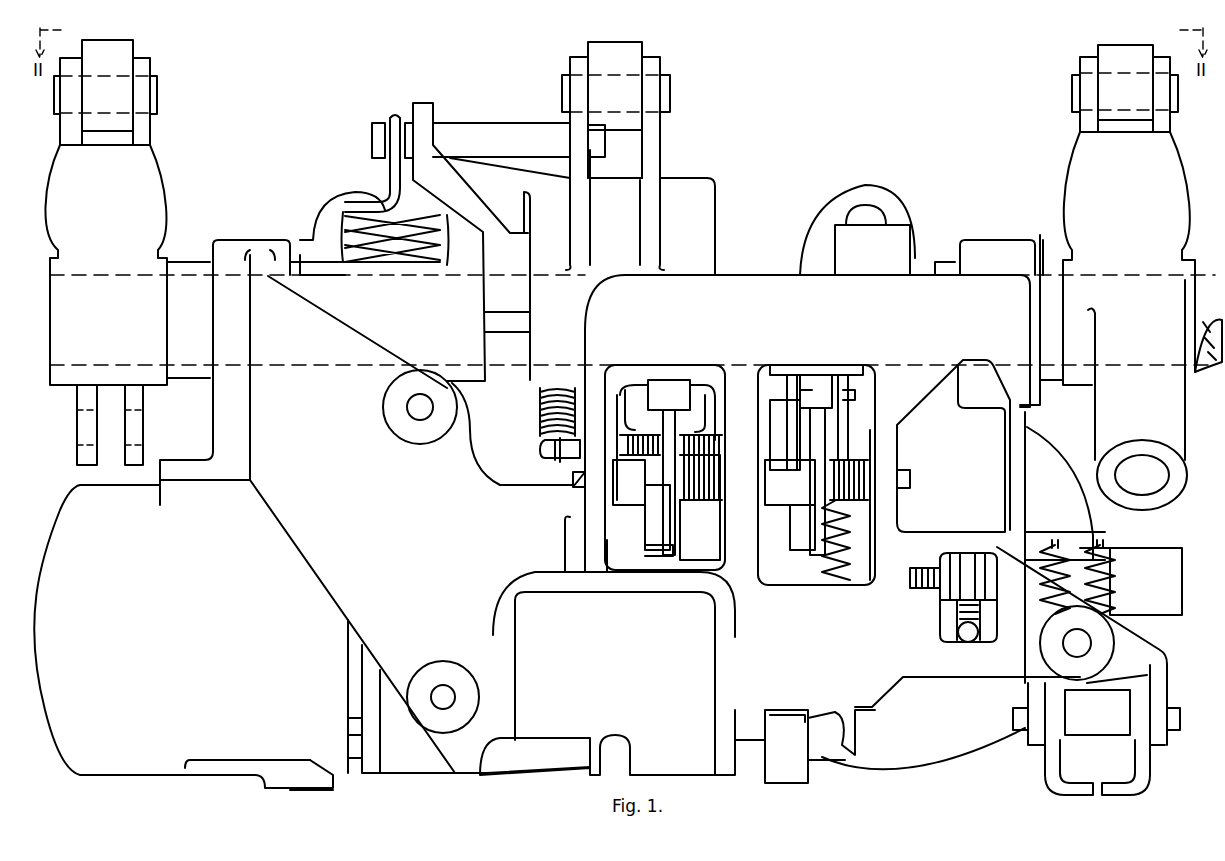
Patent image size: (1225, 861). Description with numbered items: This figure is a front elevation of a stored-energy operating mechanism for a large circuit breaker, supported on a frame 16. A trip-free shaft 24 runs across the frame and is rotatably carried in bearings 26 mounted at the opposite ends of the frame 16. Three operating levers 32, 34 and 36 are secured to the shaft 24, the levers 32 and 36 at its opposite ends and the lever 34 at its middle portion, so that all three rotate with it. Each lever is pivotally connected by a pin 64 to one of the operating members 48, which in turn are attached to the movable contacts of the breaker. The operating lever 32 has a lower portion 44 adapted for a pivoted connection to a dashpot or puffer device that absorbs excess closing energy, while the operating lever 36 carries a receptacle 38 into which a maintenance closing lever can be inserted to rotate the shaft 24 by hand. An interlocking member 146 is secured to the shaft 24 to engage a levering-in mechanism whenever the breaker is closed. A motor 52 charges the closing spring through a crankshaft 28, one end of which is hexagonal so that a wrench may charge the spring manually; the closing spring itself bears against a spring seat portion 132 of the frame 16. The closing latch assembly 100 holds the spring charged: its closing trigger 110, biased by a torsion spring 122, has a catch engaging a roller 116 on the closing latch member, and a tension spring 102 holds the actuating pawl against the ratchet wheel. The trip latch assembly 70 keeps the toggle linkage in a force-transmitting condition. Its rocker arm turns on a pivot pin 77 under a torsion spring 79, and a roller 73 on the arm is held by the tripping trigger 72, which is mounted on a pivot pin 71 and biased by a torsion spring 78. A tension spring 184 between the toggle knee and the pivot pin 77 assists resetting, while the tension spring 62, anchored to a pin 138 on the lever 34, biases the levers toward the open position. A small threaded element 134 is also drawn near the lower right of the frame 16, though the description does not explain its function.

The frame 16 is at (213, 408).
The trip-free shaft 24 is at (190, 262).
The bearings 26 is at (262, 248).
The crankshaft 28 is at (1140, 552).
The operating lever 32 is at (52, 107).
The operating lever 34 is at (552, 104).
The operating lever 36 is at (1060, 107).
The receptacle 38 is at (1095, 428).
The lower portion 44 is at (78, 400).
The operating members 48 is at (128, 50).
The motor 52 is at (130, 777).
The tension spring 62 is at (443, 218).
The pin 64 is at (158, 98).
The trip latch assembly 70 is at (678, 457).
The pivot pin 71 is at (572, 478).
The tripping trigger 72 is at (660, 485).
The roller 73 is at (665, 380).
The pivot pin 77 is at (710, 432).
The torsion spring 78 is at (705, 500).
The torsion spring 79 is at (640, 445).
The closing latch assembly 100 is at (835, 475).
The tension spring 102 is at (845, 578).
The closing trigger 110 is at (815, 480).
The roller 116 is at (815, 378).
The torsion spring 122 is at (855, 460).
The spring seat portion 132 is at (965, 765).
The adjusting screw 134 is at (960, 636).
The pin 138 is at (462, 132).
The interlocking member 146 is at (928, 230).
The tension spring 184 is at (540, 411).